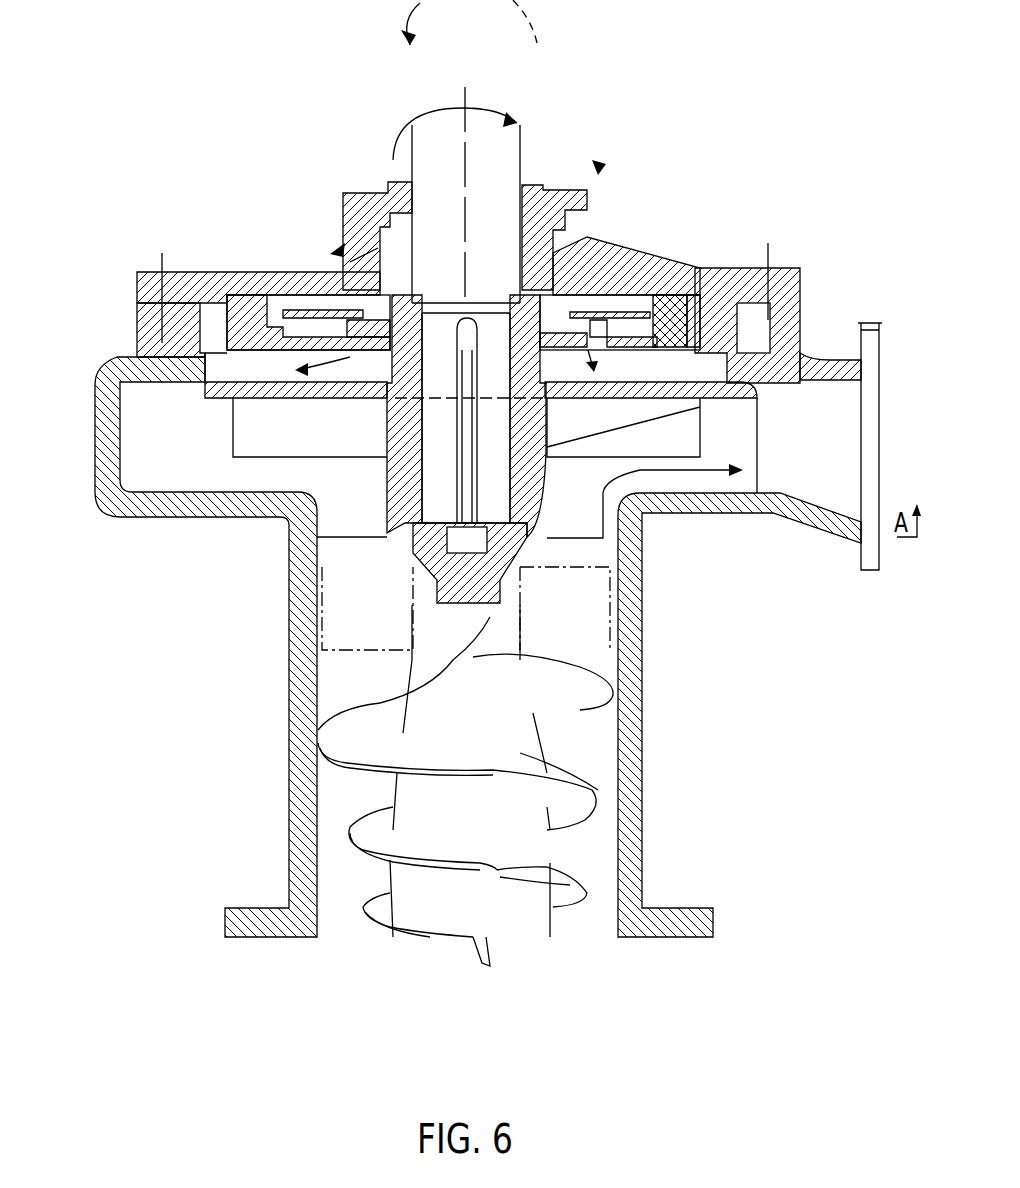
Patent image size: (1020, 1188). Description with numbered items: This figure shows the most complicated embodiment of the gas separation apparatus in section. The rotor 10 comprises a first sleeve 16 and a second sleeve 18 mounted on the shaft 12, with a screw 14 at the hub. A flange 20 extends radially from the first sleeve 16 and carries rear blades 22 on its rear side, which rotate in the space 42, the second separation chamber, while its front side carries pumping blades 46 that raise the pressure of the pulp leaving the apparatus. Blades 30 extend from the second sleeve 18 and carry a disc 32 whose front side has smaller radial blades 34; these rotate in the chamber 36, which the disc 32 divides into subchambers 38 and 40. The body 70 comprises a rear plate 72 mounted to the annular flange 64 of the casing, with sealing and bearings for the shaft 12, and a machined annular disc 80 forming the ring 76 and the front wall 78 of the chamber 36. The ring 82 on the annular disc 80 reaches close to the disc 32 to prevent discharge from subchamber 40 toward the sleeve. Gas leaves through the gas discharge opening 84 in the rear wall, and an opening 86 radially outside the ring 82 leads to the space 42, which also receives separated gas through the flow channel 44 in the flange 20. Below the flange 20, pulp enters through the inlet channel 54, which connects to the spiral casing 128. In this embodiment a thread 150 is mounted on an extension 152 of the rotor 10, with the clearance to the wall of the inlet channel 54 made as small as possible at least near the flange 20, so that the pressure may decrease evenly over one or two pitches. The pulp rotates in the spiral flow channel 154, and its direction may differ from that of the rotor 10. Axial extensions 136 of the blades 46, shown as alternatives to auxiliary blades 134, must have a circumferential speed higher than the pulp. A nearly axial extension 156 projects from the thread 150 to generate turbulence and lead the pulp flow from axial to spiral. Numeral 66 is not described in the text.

The rotor 10 is at (798, 445).
The shaft 12 is at (489, 150).
The screw 14 is at (325, 683).
The first sleeve 16 is at (775, 425).
The second sleeve 18 is at (580, 293).
The flange 20 is at (773, 347).
The rear blades 22 is at (733, 413).
The blades 30 is at (660, 300).
The disc 32 is at (275, 322).
The radial blades 34 is at (265, 330).
The chamber 36 is at (263, 290).
The subchamber 38 is at (298, 290).
The subchamber 40 is at (240, 428).
The space 42 is at (272, 382).
The flow channel 44 is at (287, 533).
The pumping blades 46 is at (285, 440).
The inlet channel 54 is at (655, 650).
The annular flange 64 is at (722, 503).
The mounting flange 66 is at (873, 323).
The body 70 is at (600, 172).
The rear plate 72 is at (600, 255).
The ring 76 is at (703, 365).
The front wall 78 is at (655, 300).
The annular disc 80 is at (270, 345).
The ring 82 is at (323, 257).
The gas discharge opening 84 is at (357, 197).
The opening 86 is at (640, 275).
The spiral casing 128 is at (190, 492).
The auxiliary blades 134 is at (340, 640).
The axial extensions 136 is at (347, 480).
The thread 150 is at (605, 665).
The extension 152 is at (520, 742).
The spiral flow channel 154 is at (578, 848).
The extension 156 is at (480, 958).